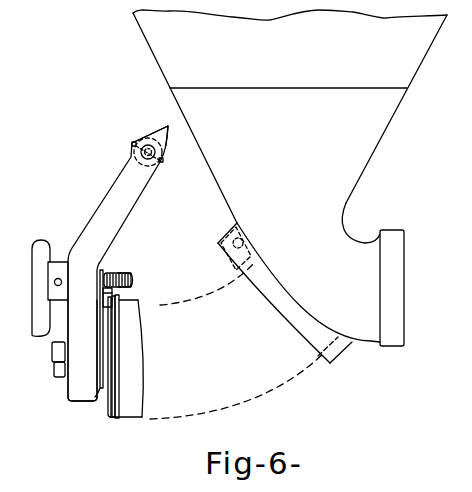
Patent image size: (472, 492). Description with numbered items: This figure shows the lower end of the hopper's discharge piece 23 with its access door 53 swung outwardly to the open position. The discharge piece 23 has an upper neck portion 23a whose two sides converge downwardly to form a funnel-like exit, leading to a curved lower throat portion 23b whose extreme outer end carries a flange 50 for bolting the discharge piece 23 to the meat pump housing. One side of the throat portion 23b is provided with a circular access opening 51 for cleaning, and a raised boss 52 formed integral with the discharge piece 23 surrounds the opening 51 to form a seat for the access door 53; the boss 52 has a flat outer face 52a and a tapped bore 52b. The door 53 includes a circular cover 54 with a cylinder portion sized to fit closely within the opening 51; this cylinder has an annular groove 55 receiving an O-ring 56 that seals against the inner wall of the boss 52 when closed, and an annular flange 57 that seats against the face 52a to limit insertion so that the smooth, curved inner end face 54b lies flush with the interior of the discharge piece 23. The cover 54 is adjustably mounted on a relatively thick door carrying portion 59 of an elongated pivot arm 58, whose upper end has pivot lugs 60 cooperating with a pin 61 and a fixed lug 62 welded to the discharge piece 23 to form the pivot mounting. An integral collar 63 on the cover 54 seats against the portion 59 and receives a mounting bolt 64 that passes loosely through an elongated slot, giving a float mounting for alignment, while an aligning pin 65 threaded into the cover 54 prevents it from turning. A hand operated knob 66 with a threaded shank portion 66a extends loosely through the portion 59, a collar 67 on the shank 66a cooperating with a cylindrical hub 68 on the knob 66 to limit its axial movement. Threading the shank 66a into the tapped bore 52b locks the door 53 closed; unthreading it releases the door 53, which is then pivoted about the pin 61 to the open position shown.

The discharge piece 23 is at (290, 176).
The upper neck portion 23a is at (369, 138).
The lower throat portion 23b is at (352, 235).
The flange 50 is at (394, 281).
The access opening 51 is at (255, 260).
The raised boss 52 is at (251, 310).
The flat outer face 52a is at (325, 365).
The tapped bore 52b is at (237, 268).
The access door 53 is at (132, 263).
The circular cover 54 is at (169, 358).
The inner end face 54b is at (135, 353).
The annular groove 55 is at (120, 384).
The O-ring 56 is at (117, 302).
The annular flange 57 is at (108, 323).
The pivot arm 58 is at (128, 202).
The door carrying portion 59 is at (75, 403).
The pivot lugs 60 is at (128, 160).
The pin 61 is at (165, 144).
The fixed lug 62 is at (167, 127).
The collar 63 is at (98, 406).
The mounting bolt 64 is at (52, 374).
The aligning pin 65 is at (107, 272).
The hand operated knob 66 is at (45, 314).
The threaded shank portion 66a is at (130, 277).
The collar 67 is at (100, 288).
The cylindrical hub 68 is at (53, 260).